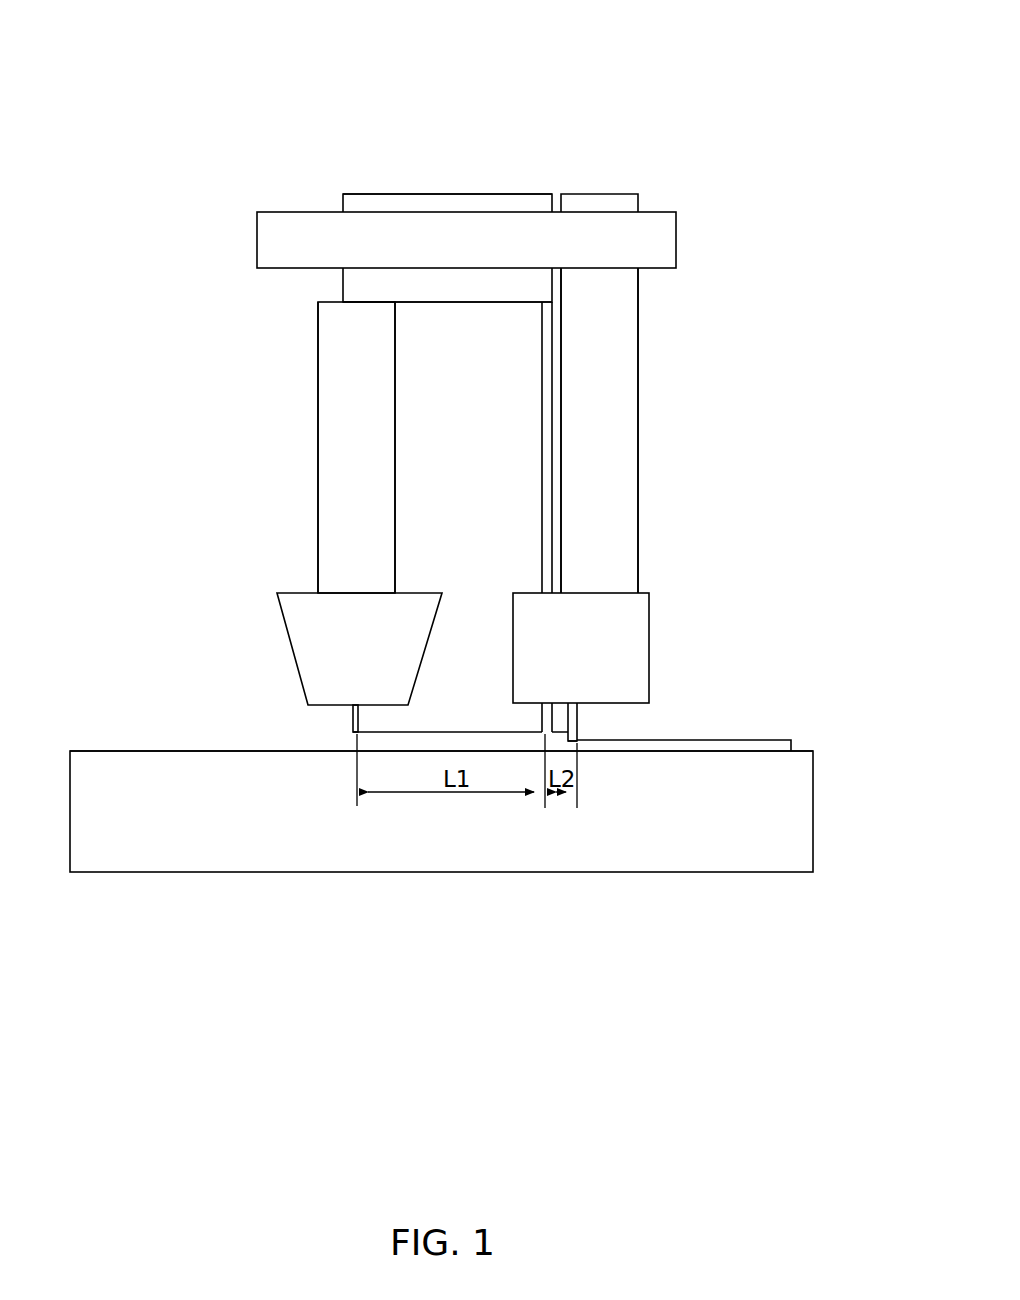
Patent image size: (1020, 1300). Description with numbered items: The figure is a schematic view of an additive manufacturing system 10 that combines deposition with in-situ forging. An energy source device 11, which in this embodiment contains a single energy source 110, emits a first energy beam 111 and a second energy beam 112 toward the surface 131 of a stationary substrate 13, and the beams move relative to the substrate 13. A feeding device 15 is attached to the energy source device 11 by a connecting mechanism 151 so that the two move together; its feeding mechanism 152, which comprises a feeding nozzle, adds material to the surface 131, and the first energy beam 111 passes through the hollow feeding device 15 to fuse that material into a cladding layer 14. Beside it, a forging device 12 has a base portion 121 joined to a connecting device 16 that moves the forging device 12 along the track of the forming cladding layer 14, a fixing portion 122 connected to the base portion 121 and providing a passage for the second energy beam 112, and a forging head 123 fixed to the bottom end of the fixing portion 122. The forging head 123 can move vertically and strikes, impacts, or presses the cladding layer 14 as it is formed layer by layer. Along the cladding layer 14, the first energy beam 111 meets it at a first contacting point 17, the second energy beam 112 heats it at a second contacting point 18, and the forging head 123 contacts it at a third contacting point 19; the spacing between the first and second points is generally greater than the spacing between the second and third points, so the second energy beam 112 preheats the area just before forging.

The additive manufacturing system 10 is at (322, 50).
The energy source device 11 is at (402, 203).
The energy source 110 is at (427, 285).
The first energy beam 111 is at (355, 728).
The second energy beam 112 is at (540, 460).
The forging device 12 is at (640, 195).
The base portion 121 is at (638, 460).
The fixing portion 122 is at (649, 648).
The forging head 123 is at (575, 727).
The substrate 13 is at (813, 825).
The surface 131 is at (162, 750).
The cladding layer 14 is at (428, 740).
The feeding device 15 is at (347, 378).
The connecting mechanism 151 is at (333, 560).
The feeding mechanism 152 is at (312, 645).
The connecting device 16 is at (676, 240).
The first contacting point 17 is at (355, 735).
The second contacting point 18 is at (542, 732).
The third contacting point 19 is at (577, 741).